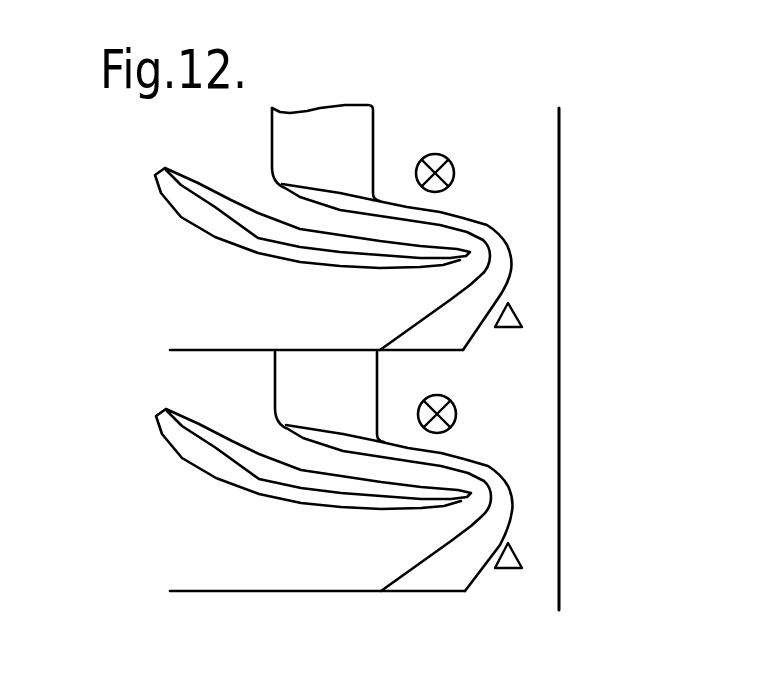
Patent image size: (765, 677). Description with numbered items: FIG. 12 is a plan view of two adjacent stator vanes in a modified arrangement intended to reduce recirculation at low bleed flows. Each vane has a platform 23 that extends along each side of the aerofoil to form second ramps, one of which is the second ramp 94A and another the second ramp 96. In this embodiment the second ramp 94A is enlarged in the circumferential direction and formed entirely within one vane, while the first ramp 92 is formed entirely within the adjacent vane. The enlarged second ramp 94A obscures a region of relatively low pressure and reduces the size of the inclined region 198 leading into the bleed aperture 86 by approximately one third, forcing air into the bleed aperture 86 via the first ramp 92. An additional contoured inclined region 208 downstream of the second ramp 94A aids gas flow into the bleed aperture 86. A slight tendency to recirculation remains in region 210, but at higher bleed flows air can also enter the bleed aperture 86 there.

The platform 23 is at (228, 330).
The second ramp 94A is at (352, 330).
The bleed aperture 86 is at (534, 428).
The first ramp 92 is at (310, 387).
The second ramp 96 is at (473, 485).
The inclined region 198 is at (390, 375).
The inclined region 208 is at (480, 292).
The recirculation region 210 is at (522, 235).